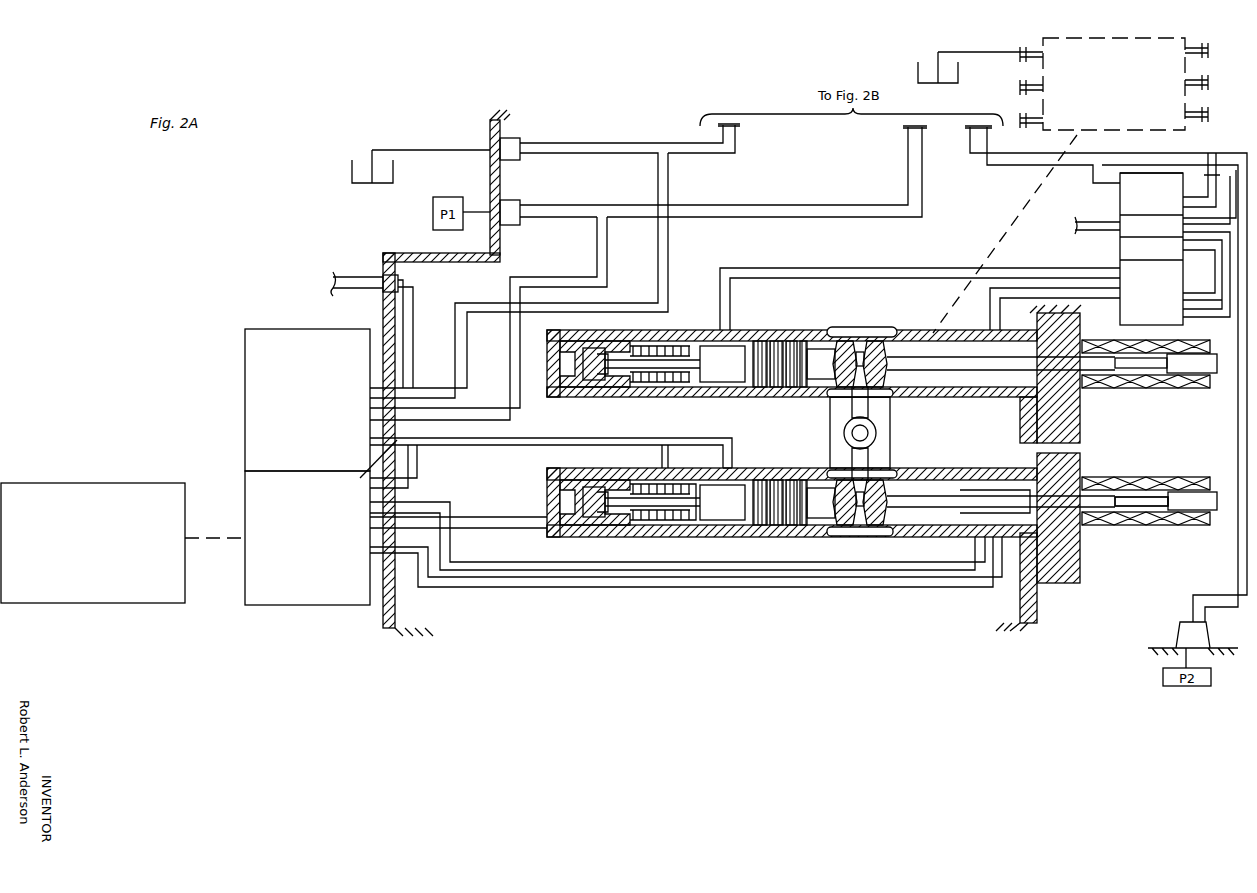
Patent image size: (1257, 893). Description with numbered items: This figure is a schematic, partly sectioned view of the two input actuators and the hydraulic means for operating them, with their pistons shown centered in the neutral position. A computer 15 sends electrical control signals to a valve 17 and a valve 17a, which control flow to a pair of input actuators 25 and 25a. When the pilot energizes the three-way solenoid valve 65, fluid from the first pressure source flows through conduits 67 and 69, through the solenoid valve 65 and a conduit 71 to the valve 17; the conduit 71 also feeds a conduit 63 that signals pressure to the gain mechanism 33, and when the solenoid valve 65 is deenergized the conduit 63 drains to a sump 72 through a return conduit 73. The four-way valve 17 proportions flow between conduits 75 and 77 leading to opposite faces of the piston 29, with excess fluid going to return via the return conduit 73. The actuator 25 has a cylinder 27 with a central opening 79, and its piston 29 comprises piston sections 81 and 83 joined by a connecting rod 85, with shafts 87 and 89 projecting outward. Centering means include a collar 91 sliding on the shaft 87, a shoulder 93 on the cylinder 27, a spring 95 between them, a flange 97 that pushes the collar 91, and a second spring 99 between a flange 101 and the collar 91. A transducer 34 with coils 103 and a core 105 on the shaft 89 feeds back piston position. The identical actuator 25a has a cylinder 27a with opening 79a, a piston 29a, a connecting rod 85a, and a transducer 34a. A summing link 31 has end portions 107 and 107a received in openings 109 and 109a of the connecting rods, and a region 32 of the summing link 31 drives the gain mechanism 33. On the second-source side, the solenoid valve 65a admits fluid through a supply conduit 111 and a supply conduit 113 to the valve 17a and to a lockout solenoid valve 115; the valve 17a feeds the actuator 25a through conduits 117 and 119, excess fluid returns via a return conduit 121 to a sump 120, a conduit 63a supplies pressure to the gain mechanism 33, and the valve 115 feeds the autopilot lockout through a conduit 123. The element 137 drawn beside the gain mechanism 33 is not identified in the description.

The computer 15 is at (133, 492).
The valve 17 is at (307, 538).
The solenoid valve 65 is at (307, 400).
The conduit 71 is at (408, 467).
The sump 72 is at (358, 178).
The conduit 63 is at (368, 277).
The return conduit 73 is at (738, 143).
The conduit 67 is at (570, 206).
The conduit 69 is at (597, 247).
The conduit 75 is at (528, 445).
The conduit 77 is at (521, 587).
The flange 101 is at (545, 519).
The cylinder 27a is at (572, 397).
The input actuator 25a is at (642, 396).
The piston 29a is at (778, 345).
The connecting rod 85a is at (822, 346).
The end portion 107a is at (864, 342).
The opening 109a is at (860, 350).
The central opening 79a is at (835, 397).
The region 32 is at (846, 434).
The summing link 31 is at (888, 452).
The central opening 79 is at (838, 461).
The shaft 89 is at (987, 496).
The shoulder 93 is at (657, 472).
The spring 95 is at (666, 466).
The flange 97 is at (730, 468).
The collar 91 is at (692, 484).
The cylinder 27 is at (590, 528).
The second spring 99 is at (625, 528).
The input actuator 25 is at (671, 537).
The shaft 87 is at (712, 512).
The piston 29 is at (766, 508).
The piston section 81 is at (800, 512).
The end portion 107 is at (858, 522).
The opening 109 is at (860, 508).
The connecting rod 85 is at (896, 508).
The piston section 83 is at (940, 507).
The coils 103 is at (1120, 525).
The core 105 is at (1130, 497).
The transducer 34 is at (1127, 489).
The transducer 34a is at (1172, 391).
The supply conduit 111 is at (975, 150).
The supply conduit 113 is at (1208, 303).
The lockout solenoid valve 115 is at (1122, 238).
The conduit 117 is at (1012, 292).
The conduit 119 is at (940, 278).
The sump 120 is at (920, 72).
The return conduit 121 is at (1208, 112).
The conduit 123 is at (1100, 222).
The conduits 137 is at (1025, 118).
The gain mechanism 33 is at (1114, 84).
The conduit 63a is at (1207, 48).
The solenoid valve 65a is at (1162, 175).
The valve 17a is at (1130, 318).